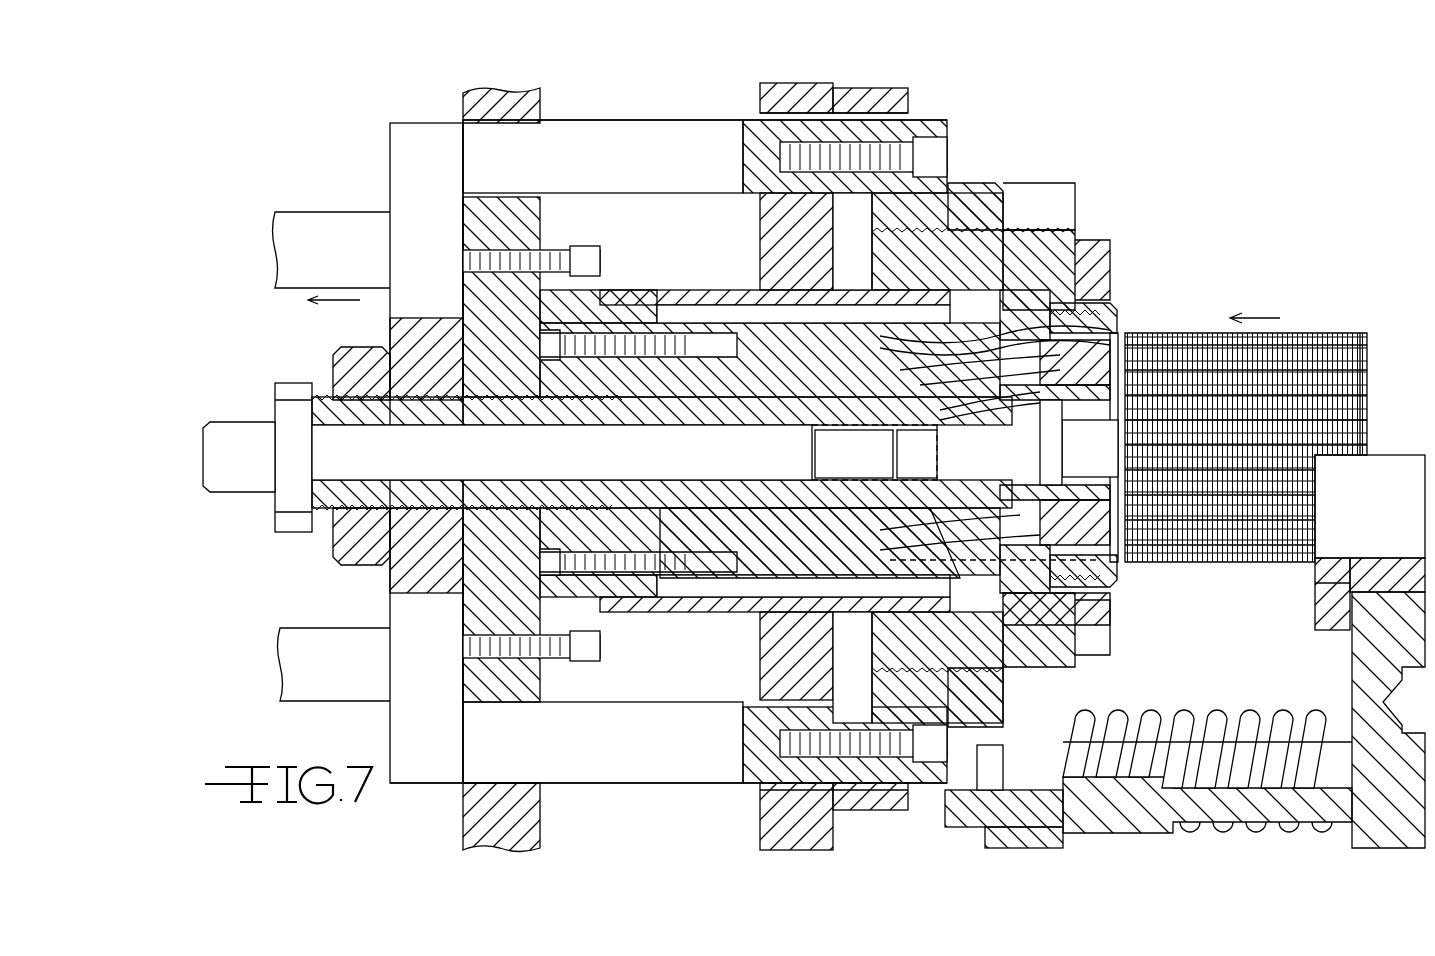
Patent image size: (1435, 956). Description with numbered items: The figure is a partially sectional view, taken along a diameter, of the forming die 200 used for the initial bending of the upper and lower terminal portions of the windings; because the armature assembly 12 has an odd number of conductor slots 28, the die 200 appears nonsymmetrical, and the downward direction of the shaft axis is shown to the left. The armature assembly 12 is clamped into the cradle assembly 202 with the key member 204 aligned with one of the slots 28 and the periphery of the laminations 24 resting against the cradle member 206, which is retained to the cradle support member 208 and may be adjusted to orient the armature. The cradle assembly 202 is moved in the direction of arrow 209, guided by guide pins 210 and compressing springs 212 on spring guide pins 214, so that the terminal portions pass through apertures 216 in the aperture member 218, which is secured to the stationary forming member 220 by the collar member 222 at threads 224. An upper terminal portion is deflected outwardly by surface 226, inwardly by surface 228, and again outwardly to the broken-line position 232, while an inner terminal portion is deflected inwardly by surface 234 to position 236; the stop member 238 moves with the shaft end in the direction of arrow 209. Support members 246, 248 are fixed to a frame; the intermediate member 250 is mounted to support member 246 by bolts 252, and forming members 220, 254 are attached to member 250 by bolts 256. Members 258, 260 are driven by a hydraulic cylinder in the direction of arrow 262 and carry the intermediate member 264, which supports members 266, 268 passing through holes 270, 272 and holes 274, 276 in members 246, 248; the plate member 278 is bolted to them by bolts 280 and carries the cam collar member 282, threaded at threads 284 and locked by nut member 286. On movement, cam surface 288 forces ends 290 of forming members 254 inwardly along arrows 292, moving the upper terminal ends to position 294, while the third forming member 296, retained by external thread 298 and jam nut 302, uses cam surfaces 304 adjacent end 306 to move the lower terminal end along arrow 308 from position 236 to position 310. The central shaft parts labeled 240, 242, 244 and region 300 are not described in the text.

The armature assembly 12 is at (1347, 300).
The laminations 24 is at (1350, 380).
The conductor slots 28 is at (1355, 410).
The forming die 200 is at (1102, 160).
The cradle assembly 202 is at (1325, 288).
The key member 204 is at (1345, 560).
The cradle member 206 is at (1405, 495).
The cradle support member 208 is at (1385, 660).
The arrow 209 is at (1268, 318).
The guide pins 210 is at (1238, 800).
The springs 212 is at (1185, 800).
The spring guide pins 214 is at (1130, 745).
The apertures 216 is at (1065, 435).
The aperture member 218 is at (1100, 345).
The stationary forming member 220 is at (1078, 305).
The collar member 222 is at (1112, 330).
The threads 224 is at (1065, 585).
The surface 226 is at (1070, 345).
The surface 228 is at (1080, 315).
The position 232 is at (1015, 290).
The surface 234 is at (1090, 360).
The position 236 is at (950, 410).
The stop member 238 is at (765, 430).
The shaft end piece 240 is at (995, 440).
The central shaft 242 is at (810, 462).
The bolt head 244 is at (240, 425).
The support member 246 is at (540, 103).
The support member 248 is at (778, 97).
The intermediate member 250 is at (575, 248).
The bolts 252 is at (600, 258).
The forming members 254 is at (665, 305).
The bolts 256 is at (618, 325).
The member 258 is at (305, 230).
The member 260 is at (355, 702).
The arrow 262 is at (360, 300).
The intermediate member 264 is at (418, 150).
The member 266 is at (590, 150).
The member 268 is at (690, 730).
The hole 270 is at (463, 123).
The hole 272 is at (760, 113).
The hole 274 is at (463, 790).
The hole 276 is at (765, 788).
The plate member 278 is at (930, 145).
The bolts 280 is at (930, 160).
The cam collar member 282 is at (880, 260).
The threads 284 is at (968, 198).
The nut member 286 is at (1020, 192).
The cam surface 288 is at (1040, 275).
The ends 290 is at (930, 293).
The arrows 292 is at (1078, 290).
The position 294 is at (945, 350).
The third forming member 296 is at (290, 498).
The external thread 298 is at (330, 520).
The hatched support 300 is at (420, 360).
The jam nut 302 is at (340, 358).
The cam surfaces 304 is at (925, 522).
The end 306 is at (960, 545).
The arrow 308 is at (945, 383).
The position 310 is at (925, 367).